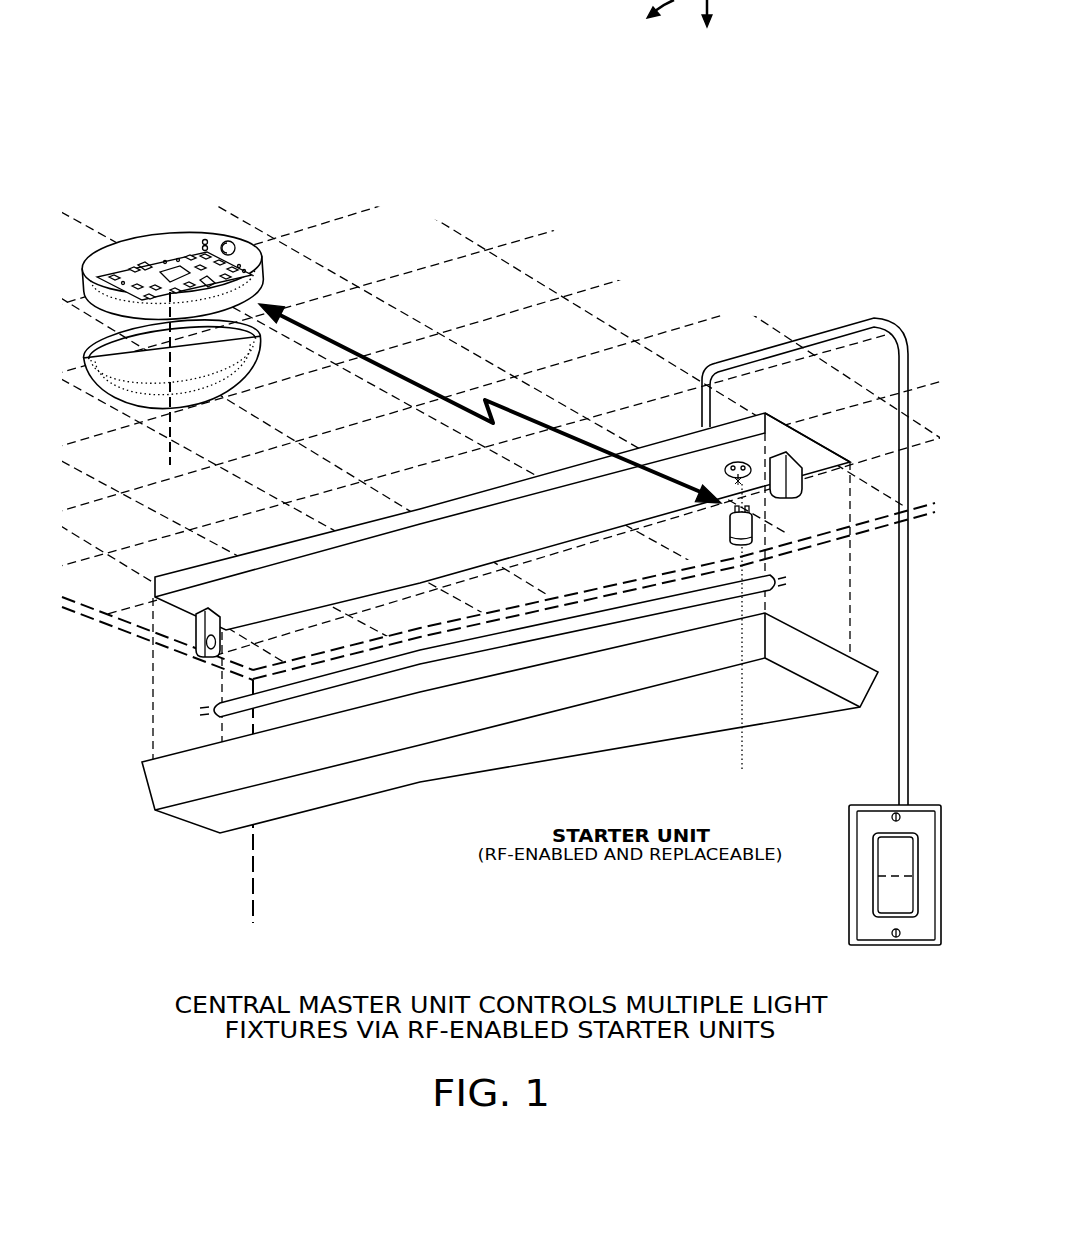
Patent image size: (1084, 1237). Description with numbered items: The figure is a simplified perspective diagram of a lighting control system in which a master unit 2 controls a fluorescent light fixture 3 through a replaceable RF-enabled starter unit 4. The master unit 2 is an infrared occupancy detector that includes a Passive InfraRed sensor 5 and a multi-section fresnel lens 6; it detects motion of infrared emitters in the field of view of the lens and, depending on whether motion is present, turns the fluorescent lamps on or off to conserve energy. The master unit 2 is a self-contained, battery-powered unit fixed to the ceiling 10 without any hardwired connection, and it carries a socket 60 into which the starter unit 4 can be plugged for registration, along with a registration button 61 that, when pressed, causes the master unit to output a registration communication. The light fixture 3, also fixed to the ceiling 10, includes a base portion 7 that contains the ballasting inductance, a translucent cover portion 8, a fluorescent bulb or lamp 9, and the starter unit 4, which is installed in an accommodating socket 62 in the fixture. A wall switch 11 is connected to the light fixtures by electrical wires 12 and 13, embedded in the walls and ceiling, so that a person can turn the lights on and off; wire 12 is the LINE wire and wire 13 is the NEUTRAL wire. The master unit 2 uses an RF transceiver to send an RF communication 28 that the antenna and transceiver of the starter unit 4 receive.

The master unit 2 is at (178, 215).
The fluorescent light fixture 3 is at (463, 586).
The starter unit 4 is at (716, 528).
The Passive InfraRed (PIR) sensor 5 is at (170, 272).
The multi-section fresnel lens 6 is at (141, 378).
The base portion 7 is at (396, 563).
The translucent cover portion 8 is at (376, 787).
The fluorescent bulb or lamp 9 is at (252, 703).
The ceiling 10 is at (297, 485).
The wall switch 11 is at (838, 876).
The LINE wire 12 is at (898, 734).
The NEUTRAL wire 13 is at (908, 770).
The RF communication 28 is at (443, 400).
The socket 60 is at (205, 228).
The registration button 61 is at (256, 228).
The accommodating socket 62 is at (726, 471).